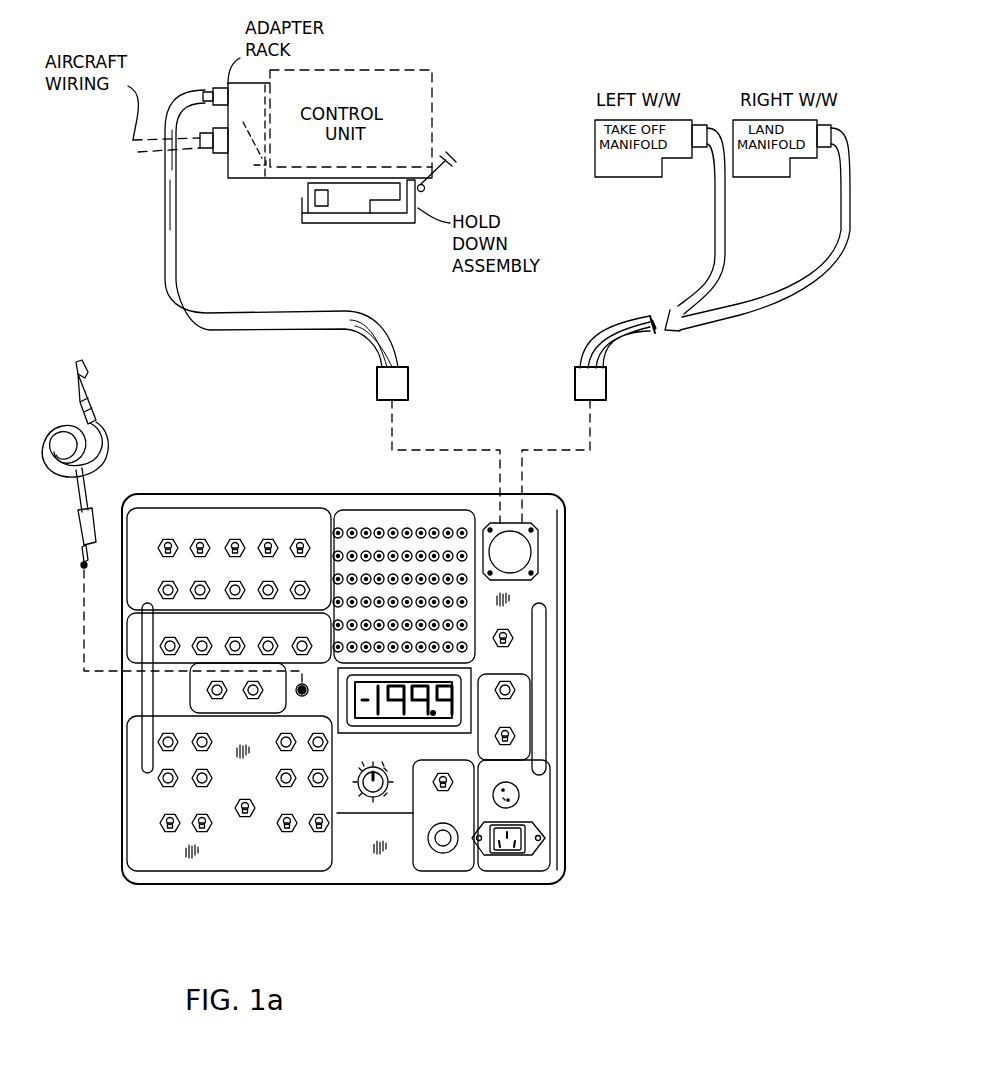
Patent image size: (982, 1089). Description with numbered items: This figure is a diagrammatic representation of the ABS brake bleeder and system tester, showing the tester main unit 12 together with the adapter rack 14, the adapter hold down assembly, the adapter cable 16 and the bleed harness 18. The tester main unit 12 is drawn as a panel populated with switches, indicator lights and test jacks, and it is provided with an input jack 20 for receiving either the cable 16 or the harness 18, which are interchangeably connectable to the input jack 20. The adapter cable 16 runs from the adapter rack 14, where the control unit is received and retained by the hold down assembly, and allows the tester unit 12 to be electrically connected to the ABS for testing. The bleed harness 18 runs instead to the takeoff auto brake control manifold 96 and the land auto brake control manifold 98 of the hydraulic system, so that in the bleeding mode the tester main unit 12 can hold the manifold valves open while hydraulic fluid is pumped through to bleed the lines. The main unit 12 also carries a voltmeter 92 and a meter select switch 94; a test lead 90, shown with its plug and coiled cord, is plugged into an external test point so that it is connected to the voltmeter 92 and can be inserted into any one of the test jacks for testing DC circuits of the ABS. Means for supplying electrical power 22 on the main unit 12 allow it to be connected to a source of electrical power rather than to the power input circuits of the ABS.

The tester main unit 12 is at (567, 634).
The adapter rack 14 is at (255, 114).
The adapter cable 16 is at (163, 222).
The bleed harness 18 is at (697, 327).
The input jack 20 is at (540, 553).
The means for supplying electrical power 22 is at (512, 856).
The test lead 90 is at (102, 449).
The voltmeter 92 is at (458, 704).
The meter select switch 94 is at (373, 797).
The takeoff auto brake control manifold 96 is at (640, 178).
The land auto brake control manifold 98 is at (745, 178).